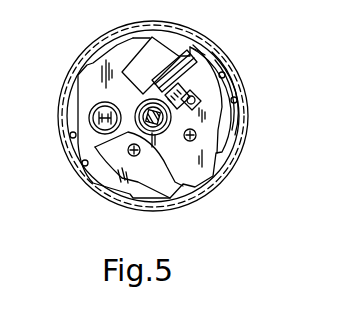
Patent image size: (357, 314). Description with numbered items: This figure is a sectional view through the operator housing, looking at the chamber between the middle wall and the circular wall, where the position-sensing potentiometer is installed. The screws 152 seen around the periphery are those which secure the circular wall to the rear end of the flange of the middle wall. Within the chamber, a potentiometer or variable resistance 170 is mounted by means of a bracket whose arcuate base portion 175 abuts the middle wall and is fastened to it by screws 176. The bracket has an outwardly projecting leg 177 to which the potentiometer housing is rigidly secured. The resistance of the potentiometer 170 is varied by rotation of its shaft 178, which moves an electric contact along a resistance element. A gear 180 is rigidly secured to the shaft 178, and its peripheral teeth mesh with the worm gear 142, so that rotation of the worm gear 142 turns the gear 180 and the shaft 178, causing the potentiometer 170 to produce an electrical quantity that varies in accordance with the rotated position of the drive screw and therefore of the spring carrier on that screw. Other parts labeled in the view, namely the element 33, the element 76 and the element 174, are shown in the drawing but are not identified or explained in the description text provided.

The housing ring 33 is at (207, 41).
The arcuate base portion 175 is at (197, 131).
The potentiometer 170 is at (165, 50).
The outwardly projecting leg 177 is at (202, 37).
The shaft 178 is at (183, 77).
The screws 152 is at (82, 161).
The gear 180 is at (238, 101).
The worm gear 142 is at (140, 104).
The screws 176 is at (191, 142).
The screw 76 is at (135, 157).
The lever 174 is at (167, 167).